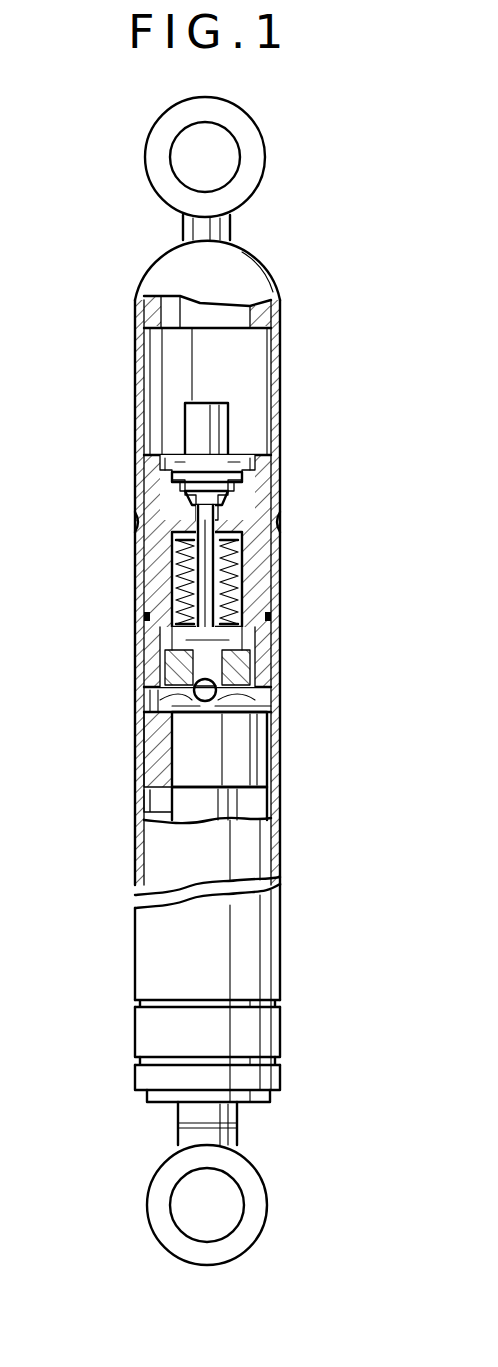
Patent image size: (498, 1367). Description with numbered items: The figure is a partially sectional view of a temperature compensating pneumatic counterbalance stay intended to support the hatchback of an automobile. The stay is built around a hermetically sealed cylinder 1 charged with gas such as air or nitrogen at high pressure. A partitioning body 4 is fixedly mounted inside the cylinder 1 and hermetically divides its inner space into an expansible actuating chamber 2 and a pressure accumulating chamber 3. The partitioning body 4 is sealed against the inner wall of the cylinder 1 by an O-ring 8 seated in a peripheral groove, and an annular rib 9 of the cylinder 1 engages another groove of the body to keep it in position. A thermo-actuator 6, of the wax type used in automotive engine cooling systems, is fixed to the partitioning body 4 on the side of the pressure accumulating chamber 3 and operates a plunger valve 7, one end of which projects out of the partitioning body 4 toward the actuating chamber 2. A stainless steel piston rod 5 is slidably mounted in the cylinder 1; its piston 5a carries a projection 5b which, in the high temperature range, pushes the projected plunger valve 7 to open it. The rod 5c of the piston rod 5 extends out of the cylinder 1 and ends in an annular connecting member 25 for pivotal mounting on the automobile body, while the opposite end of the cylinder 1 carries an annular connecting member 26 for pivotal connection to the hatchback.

The hermetically sealed cylinder 1 is at (135, 947).
The expansible actuating chamber 2 is at (160, 810).
The pressure accumulating chamber 3 is at (180, 356).
The partitioning body 4 is at (202, 571).
The piston rod 5 is at (201, 795).
The piston 5a is at (240, 757).
The projection 5b is at (265, 700).
The rod 5c is at (210, 807).
The thermo-actuator 6 is at (203, 440).
The plunger valve 7 is at (150, 700).
The O-ring 8 is at (276, 630).
The annular rib 9 is at (281, 524).
The annular connecting member 25 is at (228, 1208).
The annular connecting member 26 is at (232, 157).